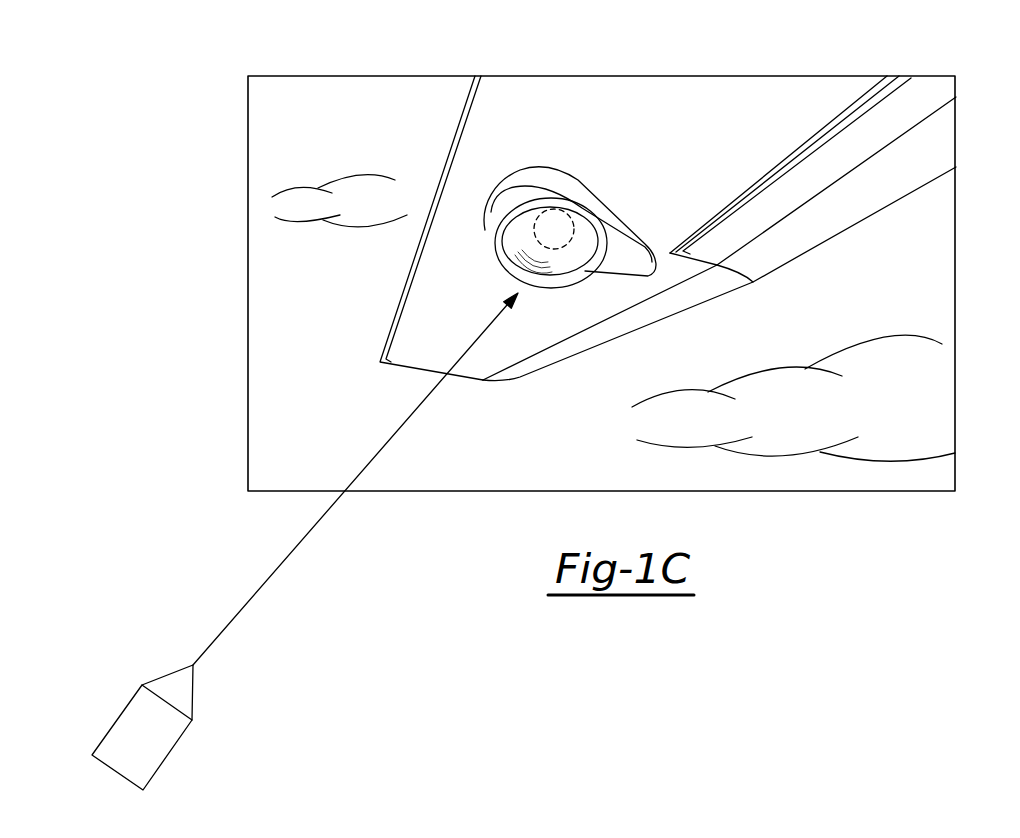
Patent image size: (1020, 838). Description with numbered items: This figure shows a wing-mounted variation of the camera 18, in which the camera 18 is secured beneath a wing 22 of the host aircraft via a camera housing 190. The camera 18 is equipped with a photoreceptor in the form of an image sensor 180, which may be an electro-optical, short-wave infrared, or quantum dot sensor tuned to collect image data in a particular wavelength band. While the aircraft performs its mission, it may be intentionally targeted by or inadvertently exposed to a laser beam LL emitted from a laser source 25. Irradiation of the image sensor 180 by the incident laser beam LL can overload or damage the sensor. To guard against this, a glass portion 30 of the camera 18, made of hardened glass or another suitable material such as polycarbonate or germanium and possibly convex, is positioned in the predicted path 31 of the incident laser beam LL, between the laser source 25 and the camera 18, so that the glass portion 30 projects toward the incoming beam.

The camera 18 is at (486, 168).
The wing 22 is at (768, 112).
The camera housing 190 is at (546, 182).
The glass portion 30 is at (507, 263).
The image sensor 180 is at (562, 248).
The predicted path 31 is at (389, 480).
The laser source 25 is at (130, 721).
The laser beam LL is at (274, 579).